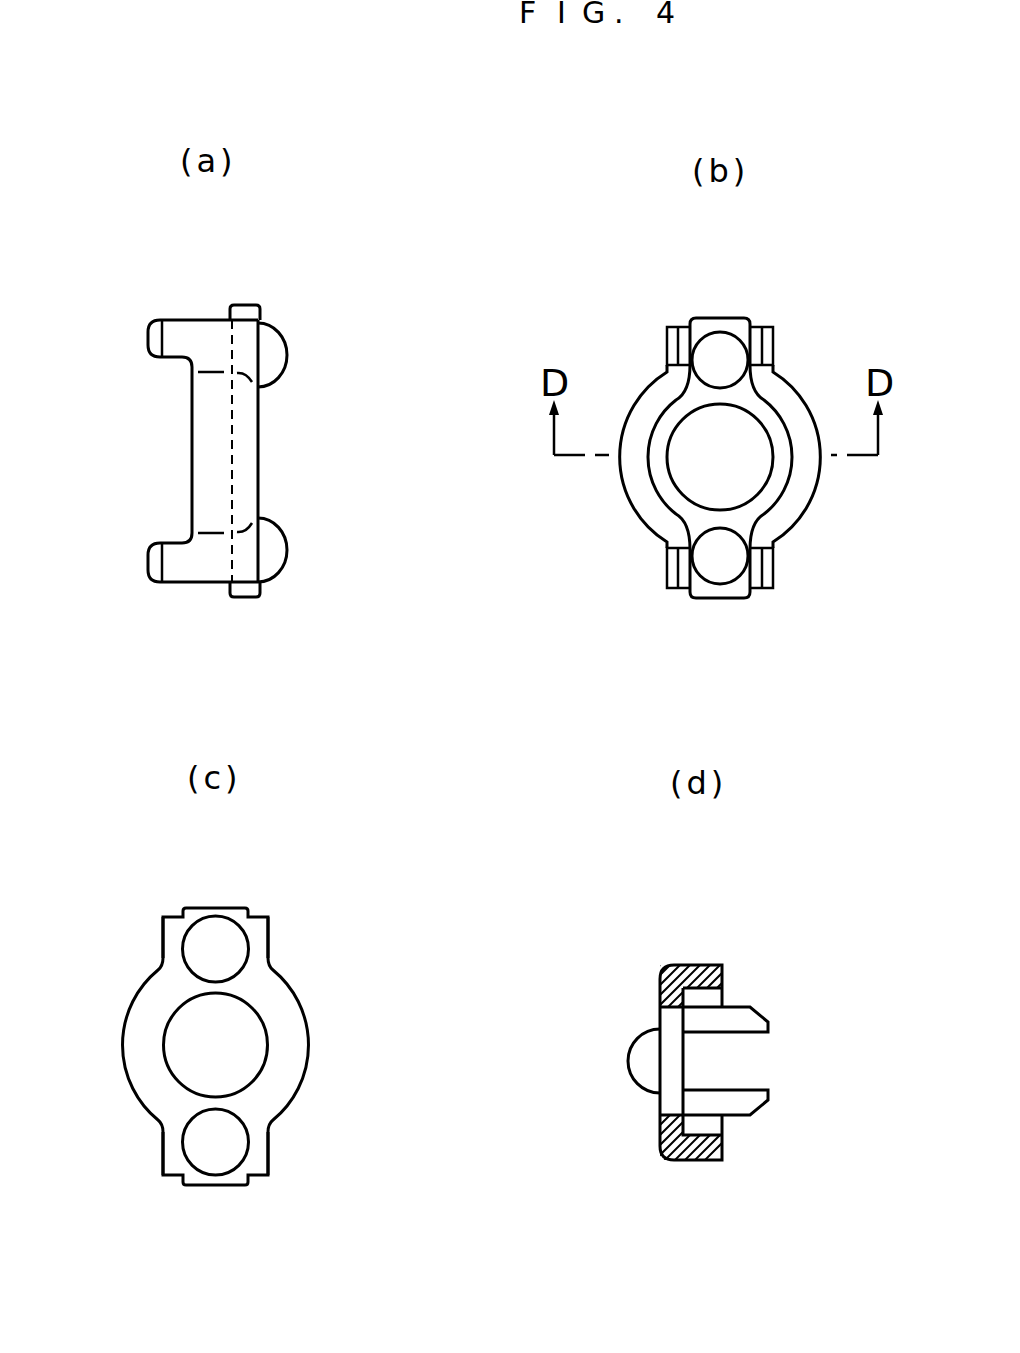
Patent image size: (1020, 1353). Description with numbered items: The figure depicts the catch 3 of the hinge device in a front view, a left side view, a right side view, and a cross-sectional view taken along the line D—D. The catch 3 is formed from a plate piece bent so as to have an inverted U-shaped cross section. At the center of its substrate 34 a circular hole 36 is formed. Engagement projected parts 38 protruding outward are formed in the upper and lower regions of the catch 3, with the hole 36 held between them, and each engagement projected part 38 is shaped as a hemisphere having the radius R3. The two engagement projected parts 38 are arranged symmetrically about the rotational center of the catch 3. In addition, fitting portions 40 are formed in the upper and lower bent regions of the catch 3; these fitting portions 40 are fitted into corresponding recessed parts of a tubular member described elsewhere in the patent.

The catch 3 is at (273, 303).
The radius R3 is at (292, 340).
The substrate 34 is at (792, 388).
The circular hole 36 is at (772, 468).
The engagement projected part 38 is at (289, 364).
The fitting portion 40 is at (665, 347).